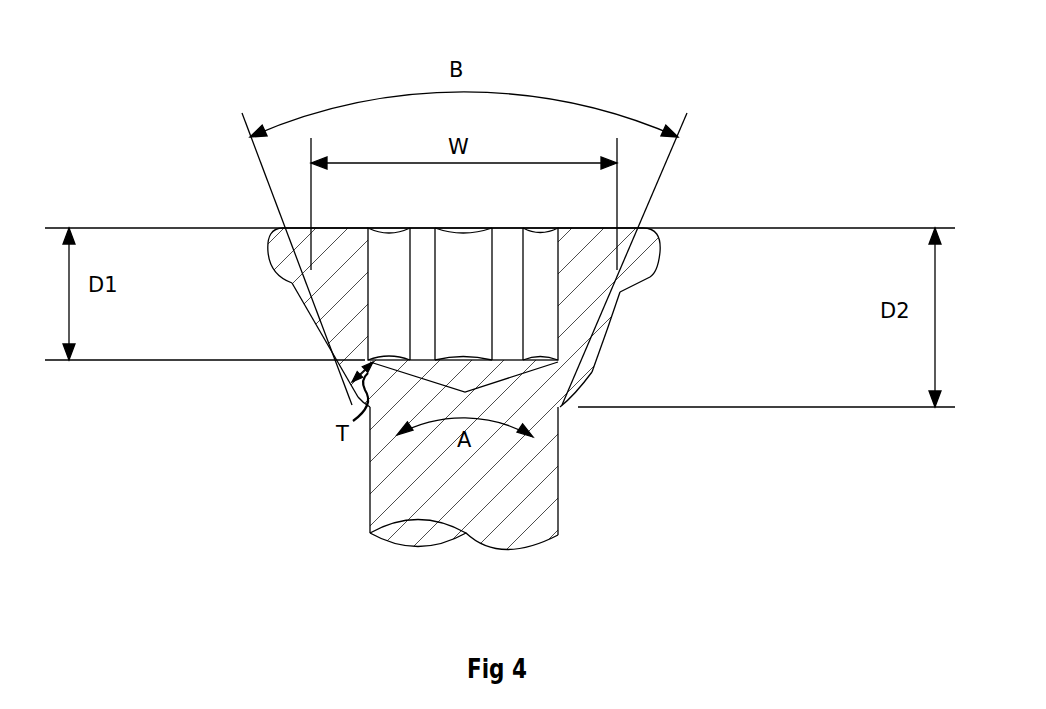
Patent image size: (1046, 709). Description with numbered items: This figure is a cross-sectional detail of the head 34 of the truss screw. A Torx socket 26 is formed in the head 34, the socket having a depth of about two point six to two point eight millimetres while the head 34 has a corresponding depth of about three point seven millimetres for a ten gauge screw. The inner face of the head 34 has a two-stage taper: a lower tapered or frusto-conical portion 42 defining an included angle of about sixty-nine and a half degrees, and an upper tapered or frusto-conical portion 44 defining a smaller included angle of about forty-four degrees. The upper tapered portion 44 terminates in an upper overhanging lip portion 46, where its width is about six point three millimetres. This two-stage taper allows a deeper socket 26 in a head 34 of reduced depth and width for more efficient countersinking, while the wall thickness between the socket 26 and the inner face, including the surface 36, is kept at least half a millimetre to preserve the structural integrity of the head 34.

The Torx socket 26 is at (466, 244).
The head 34 is at (692, 202).
The deformed sleeve wall 36 is at (610, 352).
The lower tapered portion 42 is at (578, 378).
The upper tapered portion 44 is at (608, 320).
The upper overhanging lip portion 46 is at (653, 277).